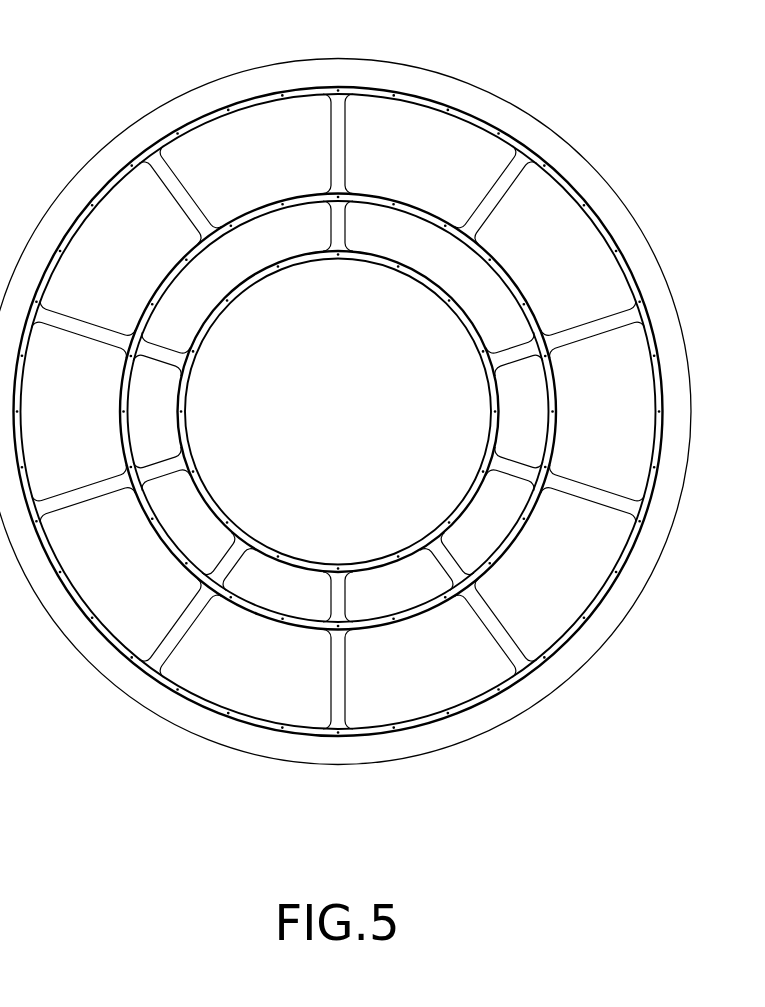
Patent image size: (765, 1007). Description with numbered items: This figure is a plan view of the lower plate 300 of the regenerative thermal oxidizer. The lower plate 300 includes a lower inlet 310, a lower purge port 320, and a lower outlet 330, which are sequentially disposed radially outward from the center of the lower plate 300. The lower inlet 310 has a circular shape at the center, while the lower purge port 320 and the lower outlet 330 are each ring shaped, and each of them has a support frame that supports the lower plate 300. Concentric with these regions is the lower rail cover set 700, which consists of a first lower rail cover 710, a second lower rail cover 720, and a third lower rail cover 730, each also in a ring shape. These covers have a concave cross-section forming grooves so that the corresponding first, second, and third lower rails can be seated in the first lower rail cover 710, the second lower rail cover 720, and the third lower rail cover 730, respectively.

The lower plate 300 is at (580, 97).
The lower inlet 310 is at (312, 427).
The lower purge port 320 is at (405, 230).
The lower outlet 330 is at (237, 148).
The lower rail cover set 700 is at (338, 475).
The first lower rail cover 710 is at (367, 570).
The second lower rail cover 720 is at (430, 607).
The third lower rail cover 730 is at (527, 673).